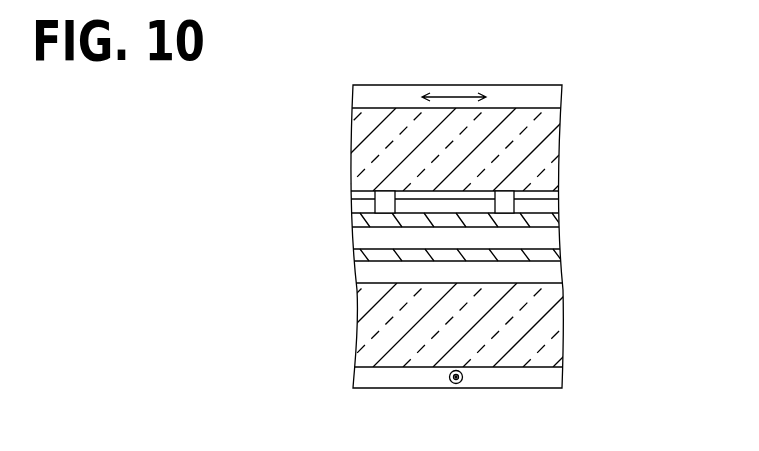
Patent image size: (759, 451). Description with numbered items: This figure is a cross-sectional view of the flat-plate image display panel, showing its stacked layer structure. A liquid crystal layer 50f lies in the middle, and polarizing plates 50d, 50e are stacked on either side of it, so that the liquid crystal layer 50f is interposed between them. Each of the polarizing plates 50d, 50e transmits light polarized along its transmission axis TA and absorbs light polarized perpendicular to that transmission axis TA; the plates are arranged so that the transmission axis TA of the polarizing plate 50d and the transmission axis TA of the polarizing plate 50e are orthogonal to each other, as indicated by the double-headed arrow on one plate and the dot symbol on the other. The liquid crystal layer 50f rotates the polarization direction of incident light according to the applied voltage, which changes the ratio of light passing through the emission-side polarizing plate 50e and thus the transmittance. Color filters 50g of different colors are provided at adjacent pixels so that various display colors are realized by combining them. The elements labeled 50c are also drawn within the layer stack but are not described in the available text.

The polarizing plate 50e is at (548, 96).
The electrodes 50c is at (390, 192).
The color filter 50g is at (366, 196).
The liquid crystal layer 50f is at (548, 237).
The polarizing plate 50d is at (552, 380).
The transmission axis TA is at (457, 97).